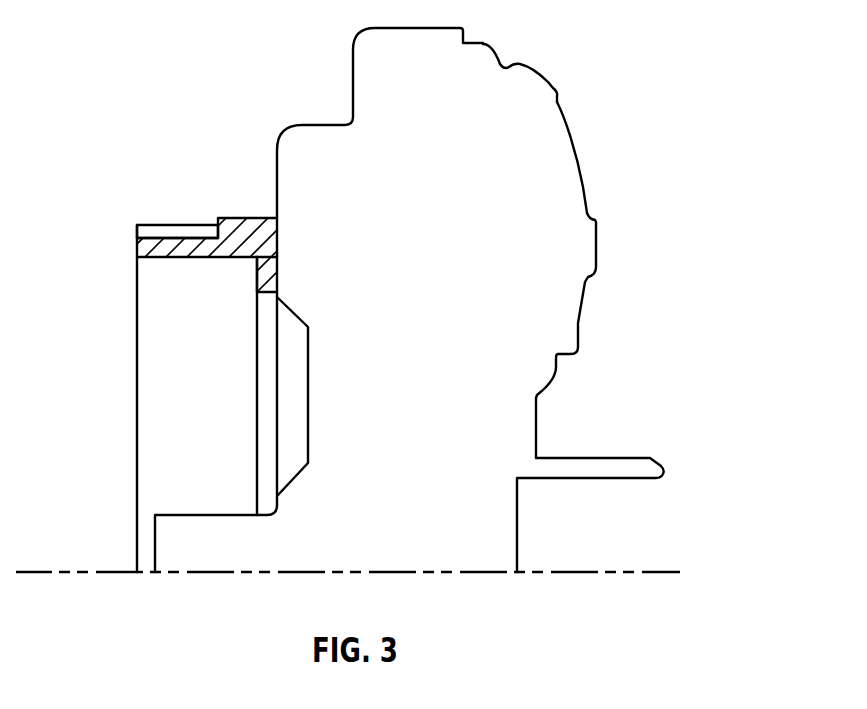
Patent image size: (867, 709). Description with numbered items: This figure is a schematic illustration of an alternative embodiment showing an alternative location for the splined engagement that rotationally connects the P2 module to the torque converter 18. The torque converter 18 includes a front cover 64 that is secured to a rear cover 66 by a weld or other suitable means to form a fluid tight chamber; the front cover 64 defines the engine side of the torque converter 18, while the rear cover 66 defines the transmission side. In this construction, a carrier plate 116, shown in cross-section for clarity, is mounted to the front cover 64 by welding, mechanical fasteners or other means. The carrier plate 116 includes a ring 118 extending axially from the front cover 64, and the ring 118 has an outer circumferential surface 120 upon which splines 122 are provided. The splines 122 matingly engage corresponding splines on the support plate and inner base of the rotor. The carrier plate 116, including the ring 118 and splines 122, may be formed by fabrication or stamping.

The torque converter 18 is at (674, 89).
The front cover 64 is at (357, 43).
The rear cover 66 is at (538, 73).
The carrier plate 116 is at (181, 170).
The ring 118 is at (178, 247).
The outer circumferential surface 120 is at (248, 218).
The splines 122 is at (152, 233).